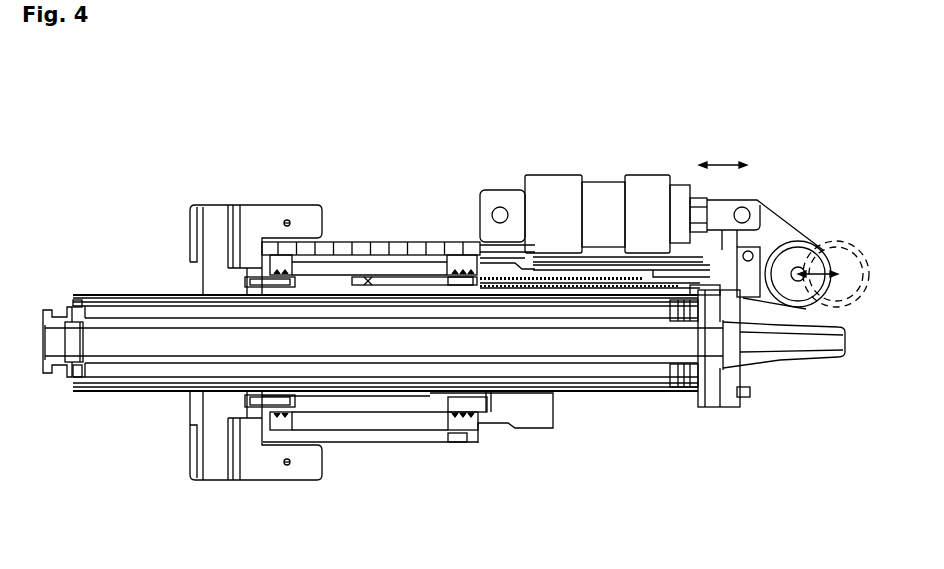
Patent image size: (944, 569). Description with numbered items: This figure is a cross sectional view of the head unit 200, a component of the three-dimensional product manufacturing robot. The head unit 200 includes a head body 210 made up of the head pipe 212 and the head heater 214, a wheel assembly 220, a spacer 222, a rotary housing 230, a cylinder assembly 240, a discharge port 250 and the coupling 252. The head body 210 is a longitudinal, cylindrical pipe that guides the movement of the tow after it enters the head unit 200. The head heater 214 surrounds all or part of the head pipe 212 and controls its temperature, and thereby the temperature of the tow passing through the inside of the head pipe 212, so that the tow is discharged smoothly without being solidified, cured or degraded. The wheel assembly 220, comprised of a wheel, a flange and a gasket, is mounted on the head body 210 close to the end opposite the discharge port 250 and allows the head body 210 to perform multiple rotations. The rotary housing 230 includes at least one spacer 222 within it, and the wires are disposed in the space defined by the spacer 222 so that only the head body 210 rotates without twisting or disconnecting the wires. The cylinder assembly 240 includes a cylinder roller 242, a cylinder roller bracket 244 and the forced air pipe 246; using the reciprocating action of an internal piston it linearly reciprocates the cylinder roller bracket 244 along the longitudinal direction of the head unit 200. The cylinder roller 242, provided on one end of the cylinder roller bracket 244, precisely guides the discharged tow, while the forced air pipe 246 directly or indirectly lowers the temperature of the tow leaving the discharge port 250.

The head unit 200 is at (818, 86).
The head body 210 is at (151, 297).
The head pipe 212 is at (88, 298).
The head heater 214 is at (107, 312).
The wheel assembly 220 is at (262, 203).
The spacer 222 is at (357, 263).
The rotary housing 230 is at (407, 247).
The cylinder assembly 240 is at (614, 172).
The cylinder roller 242 is at (816, 258).
The cylinder roller bracket 244 is at (790, 252).
The forced air pipe 246 is at (503, 282).
The discharge port 250 is at (780, 368).
The coupling 252 is at (43, 372).